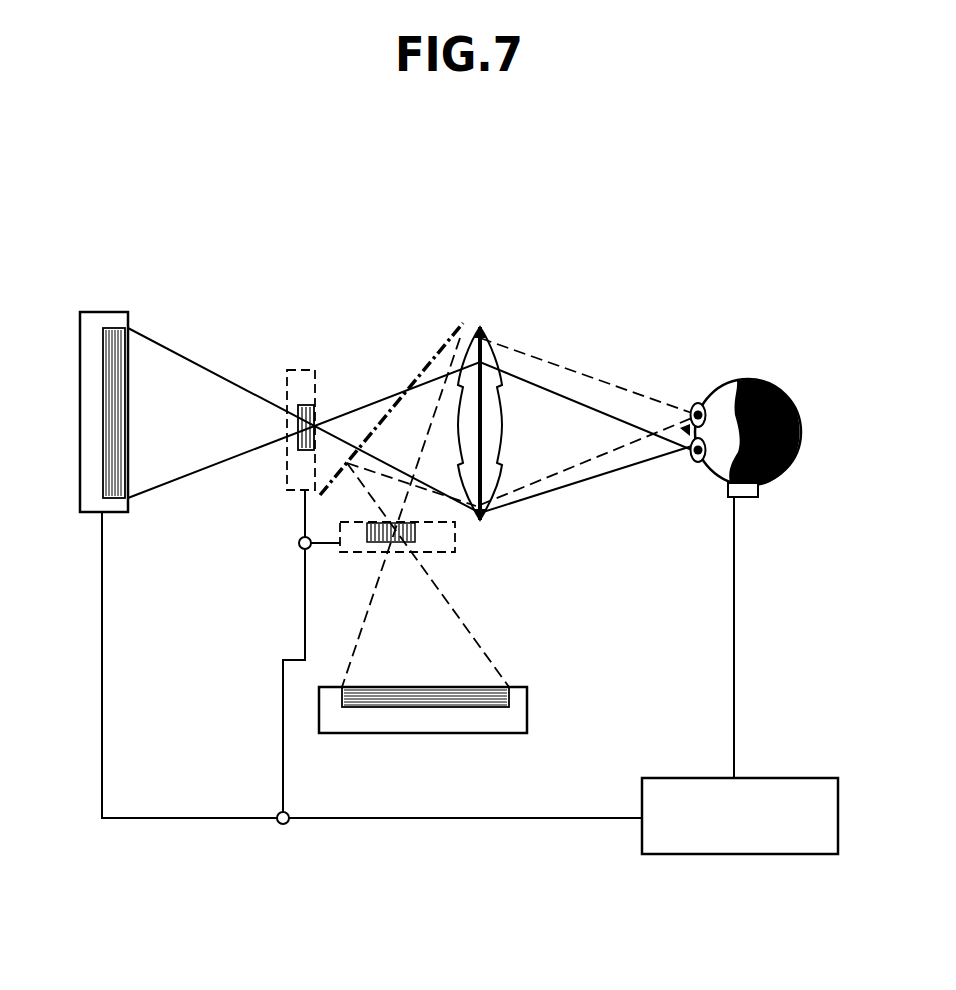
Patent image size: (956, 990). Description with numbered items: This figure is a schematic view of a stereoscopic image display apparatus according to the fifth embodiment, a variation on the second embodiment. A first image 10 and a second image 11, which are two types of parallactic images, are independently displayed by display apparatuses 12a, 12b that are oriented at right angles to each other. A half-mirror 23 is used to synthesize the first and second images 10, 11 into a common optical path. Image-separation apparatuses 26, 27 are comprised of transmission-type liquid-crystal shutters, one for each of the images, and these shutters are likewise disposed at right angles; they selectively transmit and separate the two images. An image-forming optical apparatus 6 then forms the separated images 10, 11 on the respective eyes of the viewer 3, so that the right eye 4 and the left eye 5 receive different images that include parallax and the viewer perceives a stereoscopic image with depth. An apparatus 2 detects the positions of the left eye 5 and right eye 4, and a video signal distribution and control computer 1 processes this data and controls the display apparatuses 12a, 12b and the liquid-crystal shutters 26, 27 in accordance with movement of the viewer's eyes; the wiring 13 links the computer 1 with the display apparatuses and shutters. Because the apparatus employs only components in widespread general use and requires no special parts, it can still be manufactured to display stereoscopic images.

The video signal distribution and control computer 1 is at (765, 778).
The apparatus for detecting the positions of the viewer's eyes 2 is at (758, 497).
The viewer 3 is at (758, 383).
The right eye 4 is at (697, 403).
The left eye 5 is at (696, 463).
The image-forming optical apparatus 6 is at (505, 438).
The first image 10 is at (128, 372).
The second image 11 is at (490, 687).
The display apparatus 12a is at (128, 512).
The display apparatus 12b is at (527, 712).
The wiring 13 is at (355, 818).
The half-mirror 23 is at (448, 352).
The image-separation apparatus 26 is at (287, 475).
The image-separation apparatus 27 is at (455, 556).